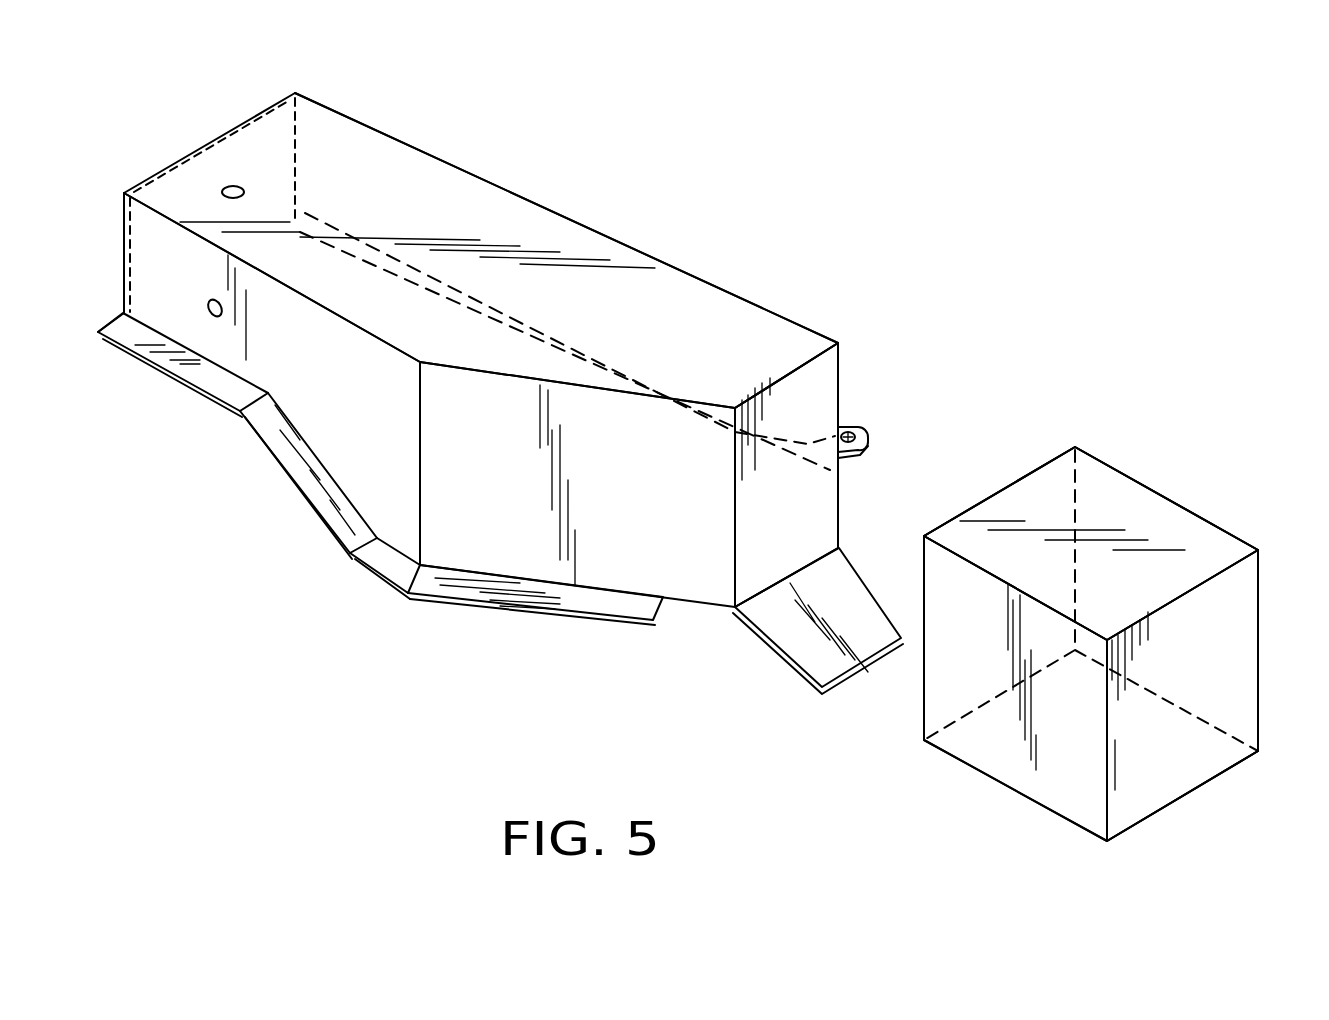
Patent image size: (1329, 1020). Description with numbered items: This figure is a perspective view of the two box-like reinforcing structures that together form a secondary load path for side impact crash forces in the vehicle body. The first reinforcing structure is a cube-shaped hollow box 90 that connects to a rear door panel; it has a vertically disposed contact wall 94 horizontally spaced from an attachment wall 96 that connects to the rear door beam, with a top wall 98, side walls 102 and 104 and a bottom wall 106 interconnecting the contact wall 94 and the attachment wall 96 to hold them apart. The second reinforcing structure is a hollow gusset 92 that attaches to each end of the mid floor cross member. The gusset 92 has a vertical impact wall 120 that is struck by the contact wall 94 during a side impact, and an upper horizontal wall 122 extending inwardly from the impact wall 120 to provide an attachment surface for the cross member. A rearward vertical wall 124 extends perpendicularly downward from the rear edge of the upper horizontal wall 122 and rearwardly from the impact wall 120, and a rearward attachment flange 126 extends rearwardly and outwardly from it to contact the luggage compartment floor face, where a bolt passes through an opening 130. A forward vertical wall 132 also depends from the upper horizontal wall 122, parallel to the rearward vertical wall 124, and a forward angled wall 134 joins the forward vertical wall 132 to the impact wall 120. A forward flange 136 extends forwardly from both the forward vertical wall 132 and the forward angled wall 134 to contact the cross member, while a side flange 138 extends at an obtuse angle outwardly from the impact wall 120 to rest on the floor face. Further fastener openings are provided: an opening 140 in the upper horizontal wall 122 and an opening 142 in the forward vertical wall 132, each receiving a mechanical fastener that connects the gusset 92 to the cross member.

The box-shaped reinforcing structure 90 is at (1140, 454).
The gusset 92 is at (617, 177).
The contact wall 94 is at (998, 491).
The attachment wall 96 is at (1240, 646).
The top wall 98 is at (1154, 519).
The side wall 102 is at (1226, 530).
The side wall 104 is at (986, 736).
The bottom wall 106 is at (1189, 794).
The vertical impact wall 120 is at (820, 377).
The upper horizontal wall 122 is at (680, 303).
The rearward vertical wall 124 is at (479, 172).
The rearward attachment flange 126 is at (538, 314).
The opening 130 is at (850, 435).
The forward vertical wall 132 is at (150, 256).
The forward angled wall 134 is at (500, 543).
The forward flange 136 is at (398, 570).
The side flange 138 is at (795, 637).
The opening 140 is at (232, 188).
The opening 142 is at (208, 318).